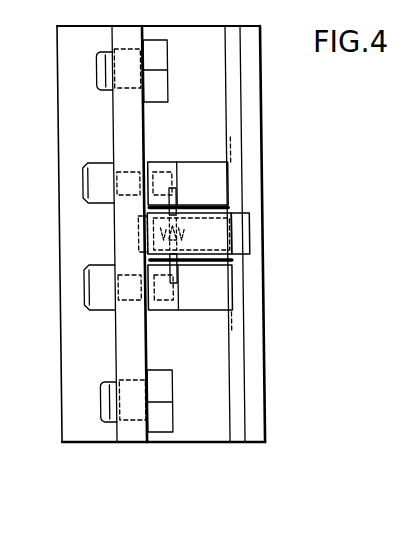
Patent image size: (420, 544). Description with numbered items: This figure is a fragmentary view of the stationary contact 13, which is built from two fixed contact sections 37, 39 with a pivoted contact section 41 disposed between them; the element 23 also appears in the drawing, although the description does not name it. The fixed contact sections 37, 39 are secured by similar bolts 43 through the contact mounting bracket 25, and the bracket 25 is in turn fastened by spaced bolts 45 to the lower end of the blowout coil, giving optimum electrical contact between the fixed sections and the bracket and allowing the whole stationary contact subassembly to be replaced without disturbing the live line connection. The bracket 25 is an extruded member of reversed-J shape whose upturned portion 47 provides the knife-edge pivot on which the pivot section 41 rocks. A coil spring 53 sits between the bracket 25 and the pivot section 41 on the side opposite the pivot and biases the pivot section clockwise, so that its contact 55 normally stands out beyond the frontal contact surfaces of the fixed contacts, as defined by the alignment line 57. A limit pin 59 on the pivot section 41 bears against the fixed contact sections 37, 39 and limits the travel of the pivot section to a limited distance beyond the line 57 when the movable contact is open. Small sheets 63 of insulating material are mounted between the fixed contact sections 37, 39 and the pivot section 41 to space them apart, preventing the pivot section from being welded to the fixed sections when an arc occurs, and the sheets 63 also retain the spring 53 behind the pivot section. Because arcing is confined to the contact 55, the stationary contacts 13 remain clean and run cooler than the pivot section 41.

The stationary contact 13 is at (226, 183).
The frame wall 23 is at (65, 100).
The contact mounting bracket 25 is at (173, 442).
The fixed contact section 37 is at (190, 305).
The fixed contact section 39 is at (192, 166).
The pivoted contact section 41 is at (213, 243).
The bolts 43 is at (98, 197).
The spaced bolts 45 is at (168, 52).
The upturned portion 47 is at (260, 428).
The coil spring 53 is at (213, 222).
The contact 55 is at (247, 247).
The alignment line 57 is at (229, 327).
The limit pin 59 is at (175, 206).
The sheets of insulating material 63 is at (223, 202).